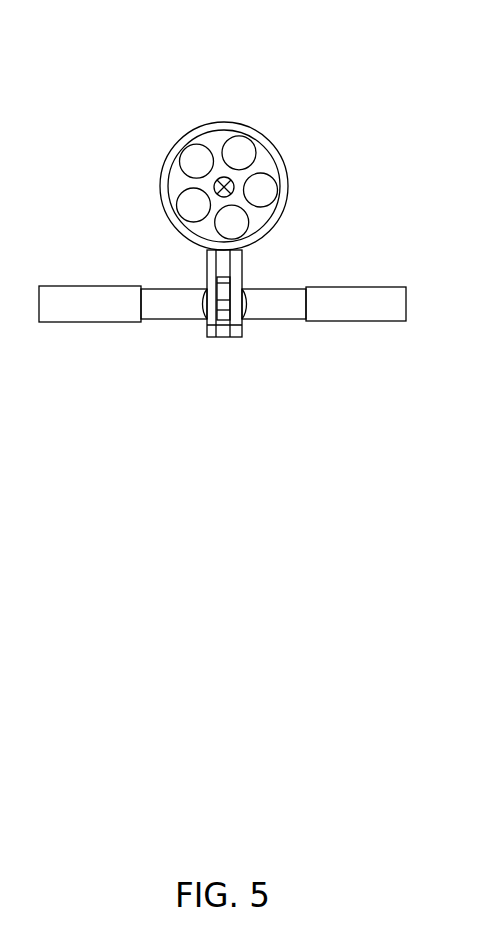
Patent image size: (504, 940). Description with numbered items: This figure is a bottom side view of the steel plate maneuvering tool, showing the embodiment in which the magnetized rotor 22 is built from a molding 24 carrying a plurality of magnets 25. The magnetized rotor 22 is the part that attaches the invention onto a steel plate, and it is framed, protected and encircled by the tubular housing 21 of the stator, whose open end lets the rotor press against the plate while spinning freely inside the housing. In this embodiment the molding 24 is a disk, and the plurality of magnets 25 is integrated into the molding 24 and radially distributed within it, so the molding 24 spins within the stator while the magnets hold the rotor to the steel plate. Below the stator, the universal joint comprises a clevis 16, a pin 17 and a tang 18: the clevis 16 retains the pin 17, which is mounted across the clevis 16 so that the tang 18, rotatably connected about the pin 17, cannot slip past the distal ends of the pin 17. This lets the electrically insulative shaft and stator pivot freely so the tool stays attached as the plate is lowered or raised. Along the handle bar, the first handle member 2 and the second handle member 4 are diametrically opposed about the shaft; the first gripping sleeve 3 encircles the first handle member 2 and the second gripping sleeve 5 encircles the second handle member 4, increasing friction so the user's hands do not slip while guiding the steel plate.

The first handle member 2 is at (167, 310).
The first gripping sleeve 3 is at (55, 310).
The second handle member 4 is at (272, 310).
The second gripping sleeve 5 is at (380, 308).
The clevis 16 is at (207, 280).
The pin 17 is at (227, 312).
The tang 18 is at (242, 283).
The tubular housing 21 is at (160, 188).
The magnetized rotor 22 is at (218, 146).
The molding 24 is at (268, 166).
The plurality of magnets 25 is at (205, 153).